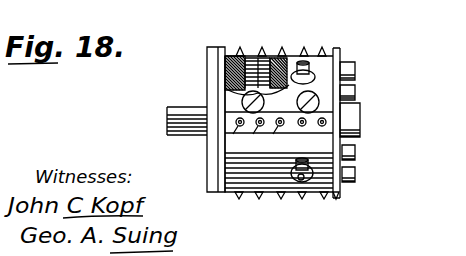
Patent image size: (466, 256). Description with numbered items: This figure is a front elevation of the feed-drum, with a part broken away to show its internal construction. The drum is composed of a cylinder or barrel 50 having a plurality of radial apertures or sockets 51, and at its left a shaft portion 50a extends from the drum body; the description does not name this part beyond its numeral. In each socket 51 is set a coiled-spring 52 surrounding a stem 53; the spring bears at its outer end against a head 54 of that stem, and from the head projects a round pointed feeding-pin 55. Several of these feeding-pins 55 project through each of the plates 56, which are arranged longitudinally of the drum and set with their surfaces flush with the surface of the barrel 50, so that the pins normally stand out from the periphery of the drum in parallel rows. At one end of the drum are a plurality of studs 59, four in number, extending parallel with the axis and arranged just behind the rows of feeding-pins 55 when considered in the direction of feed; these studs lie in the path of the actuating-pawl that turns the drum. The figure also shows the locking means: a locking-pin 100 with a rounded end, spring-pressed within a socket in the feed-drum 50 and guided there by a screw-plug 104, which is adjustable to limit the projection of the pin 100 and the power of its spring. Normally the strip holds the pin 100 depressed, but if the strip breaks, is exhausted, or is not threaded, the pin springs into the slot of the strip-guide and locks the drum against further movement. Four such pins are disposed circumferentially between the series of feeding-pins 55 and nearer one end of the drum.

The cylinder or barrel 50 is at (340, 142).
The shaft 50a is at (177, 118).
The radial apertures or sockets 51 is at (225, 72).
The coiled-spring 52 is at (225, 82).
The stem 53 is at (227, 68).
The head 54 is at (285, 60).
The feeding-pin 55 is at (257, 199).
The plate 56 is at (360, 108).
The stud 59 is at (375, 168).
The locking-pin 100 is at (298, 185).
The screw-plug 104 is at (313, 193).